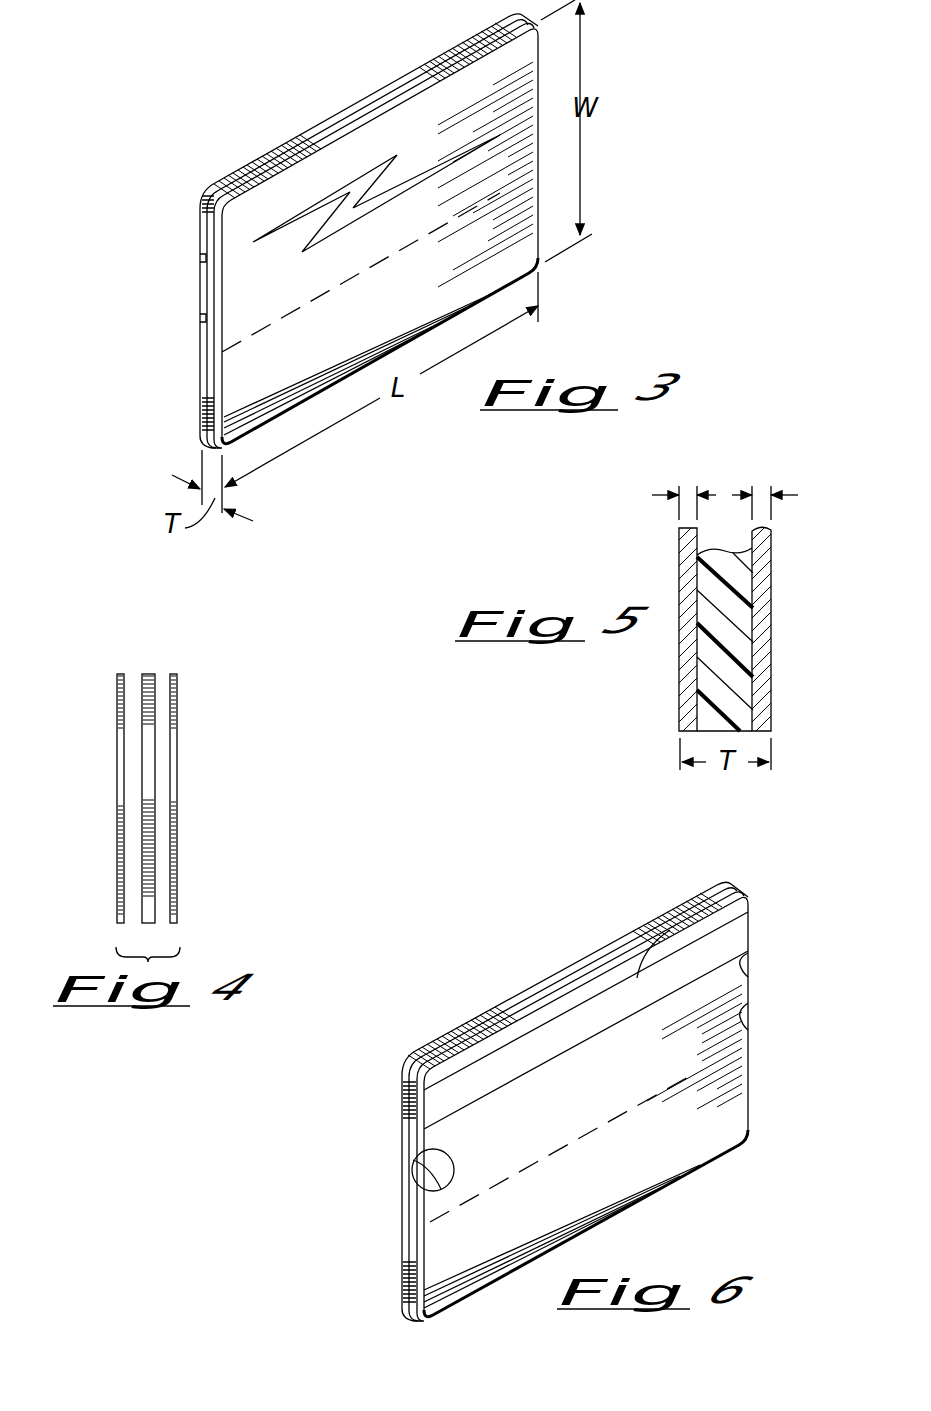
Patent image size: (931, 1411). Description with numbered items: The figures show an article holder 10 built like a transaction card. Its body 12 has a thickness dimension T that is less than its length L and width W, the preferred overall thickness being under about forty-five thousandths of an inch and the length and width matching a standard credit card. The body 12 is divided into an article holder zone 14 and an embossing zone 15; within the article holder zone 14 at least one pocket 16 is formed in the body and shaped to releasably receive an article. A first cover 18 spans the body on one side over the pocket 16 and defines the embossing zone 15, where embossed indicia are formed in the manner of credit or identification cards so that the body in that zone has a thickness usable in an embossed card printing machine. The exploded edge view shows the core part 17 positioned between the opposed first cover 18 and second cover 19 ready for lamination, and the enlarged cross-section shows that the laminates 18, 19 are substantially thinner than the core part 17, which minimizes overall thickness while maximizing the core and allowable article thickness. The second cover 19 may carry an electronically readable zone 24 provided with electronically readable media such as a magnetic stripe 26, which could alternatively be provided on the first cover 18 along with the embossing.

In FIG. 3, the article holder 10 is at (288, 105).
In FIG. 3, the body 12 is at (206, 374).
In FIG. 4, the body 12 is at (148, 668).
In FIG. 5, the body 12 is at (714, 657).
In FIG. 6, the body 12 is at (552, 982).
In FIG. 3, the article holder zone 14 is at (425, 158).
In FIG. 6, the article holder zone 14 is at (760, 1030).
In FIG. 3, the embossing zone 15 is at (502, 260).
In FIG. 6, the embossing zone 15 is at (760, 1130).
In FIG. 3, the pocket 16 is at (200, 258).
In FIG. 5, the core part 17 is at (718, 698).
In FIG. 6, the core part 17 is at (406, 1108).
In FIG. 3, the first cover 18 is at (244, 200).
In FIG. 4, the first cover 18 is at (178, 712).
In FIG. 5, the first cover 18 is at (762, 584).
In FIG. 6, the first cover 18 is at (490, 1033).
In FIG. 3, the second cover 19 is at (198, 222).
In FIG. 4, the second cover 19 is at (118, 695).
In FIG. 5, the second cover 19 is at (678, 551).
In FIG. 6, the second cover 19 is at (693, 1153).
In FIG. 6, the electronically readable zone 24 is at (760, 900).
In FIG. 6, the magnetic stripe 26 is at (645, 938).